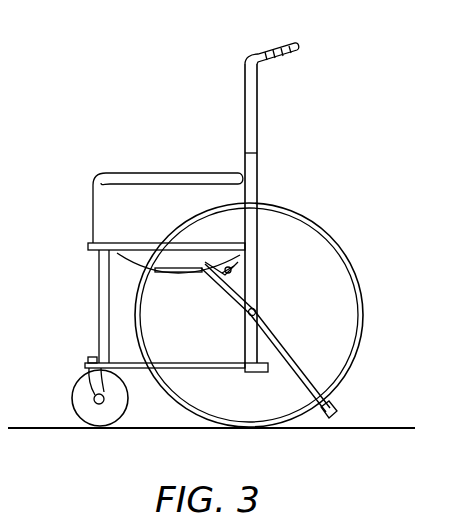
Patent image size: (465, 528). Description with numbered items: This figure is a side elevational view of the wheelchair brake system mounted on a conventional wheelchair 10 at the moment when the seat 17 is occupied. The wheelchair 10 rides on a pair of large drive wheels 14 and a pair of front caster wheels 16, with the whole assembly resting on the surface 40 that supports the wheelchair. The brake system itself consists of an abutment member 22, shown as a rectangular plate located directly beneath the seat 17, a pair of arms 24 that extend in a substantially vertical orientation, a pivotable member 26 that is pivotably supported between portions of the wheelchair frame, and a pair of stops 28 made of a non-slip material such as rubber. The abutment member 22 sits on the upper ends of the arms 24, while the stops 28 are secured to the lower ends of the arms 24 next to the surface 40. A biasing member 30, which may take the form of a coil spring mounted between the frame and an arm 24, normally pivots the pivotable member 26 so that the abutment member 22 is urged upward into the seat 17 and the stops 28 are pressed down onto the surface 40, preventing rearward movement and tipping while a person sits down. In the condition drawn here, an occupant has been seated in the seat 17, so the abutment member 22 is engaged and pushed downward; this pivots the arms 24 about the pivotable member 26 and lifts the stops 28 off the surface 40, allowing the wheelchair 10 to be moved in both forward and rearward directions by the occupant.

The wheelchair 10 is at (262, 123).
The drive wheels 14 is at (366, 311).
The front caster wheels 16 is at (72, 402).
The seat 17 is at (117, 253).
The abutment member 22 is at (175, 275).
The arms 24 is at (238, 300).
The pivotable member 26 is at (259, 311).
The stops 28 is at (337, 407).
The biasing member 30 is at (233, 270).
The surface 40 is at (373, 430).